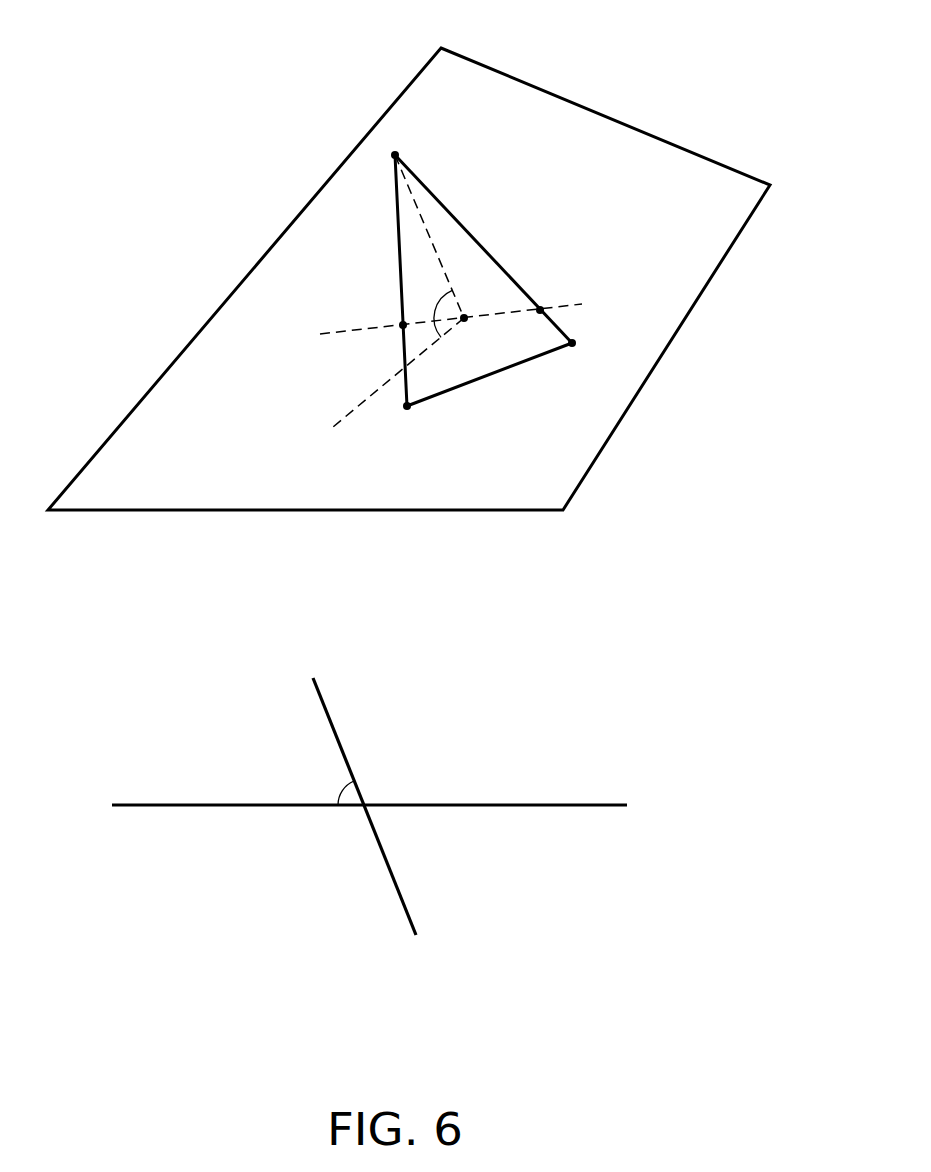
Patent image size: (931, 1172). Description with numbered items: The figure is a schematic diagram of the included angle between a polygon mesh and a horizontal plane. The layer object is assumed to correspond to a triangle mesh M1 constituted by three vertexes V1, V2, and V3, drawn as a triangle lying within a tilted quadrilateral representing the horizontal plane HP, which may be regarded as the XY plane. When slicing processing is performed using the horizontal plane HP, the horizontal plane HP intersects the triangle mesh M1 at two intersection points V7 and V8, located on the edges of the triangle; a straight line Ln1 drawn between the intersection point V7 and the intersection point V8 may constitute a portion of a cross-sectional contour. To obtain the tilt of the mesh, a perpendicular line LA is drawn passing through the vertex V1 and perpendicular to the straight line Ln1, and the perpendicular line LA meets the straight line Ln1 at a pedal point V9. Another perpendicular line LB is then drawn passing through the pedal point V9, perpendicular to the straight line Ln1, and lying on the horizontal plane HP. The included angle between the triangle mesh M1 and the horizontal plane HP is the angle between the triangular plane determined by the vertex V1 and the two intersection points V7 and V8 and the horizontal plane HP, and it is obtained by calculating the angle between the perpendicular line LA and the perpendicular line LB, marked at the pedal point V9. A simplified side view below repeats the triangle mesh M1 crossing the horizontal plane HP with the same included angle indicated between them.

The horizontal plane HP is at (662, 178).
The triangle mesh M1 is at (473, 273).
The perpendicular line LA is at (422, 218).
The perpendicular line LB is at (350, 415).
The straight line Ln1 is at (502, 312).
The vertex V1 is at (404, 137).
The vertex V2 is at (408, 425).
The vertex V3 is at (590, 349).
The intersection point V7 is at (388, 309).
The intersection point V8 is at (552, 294).
The pedal point V9 is at (472, 339).